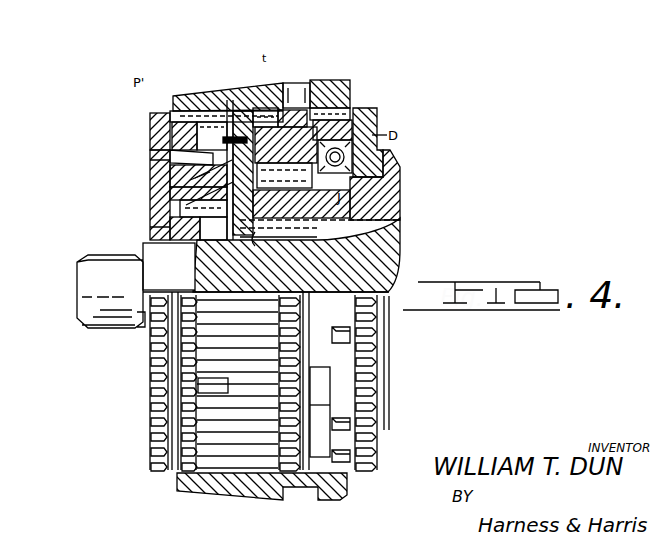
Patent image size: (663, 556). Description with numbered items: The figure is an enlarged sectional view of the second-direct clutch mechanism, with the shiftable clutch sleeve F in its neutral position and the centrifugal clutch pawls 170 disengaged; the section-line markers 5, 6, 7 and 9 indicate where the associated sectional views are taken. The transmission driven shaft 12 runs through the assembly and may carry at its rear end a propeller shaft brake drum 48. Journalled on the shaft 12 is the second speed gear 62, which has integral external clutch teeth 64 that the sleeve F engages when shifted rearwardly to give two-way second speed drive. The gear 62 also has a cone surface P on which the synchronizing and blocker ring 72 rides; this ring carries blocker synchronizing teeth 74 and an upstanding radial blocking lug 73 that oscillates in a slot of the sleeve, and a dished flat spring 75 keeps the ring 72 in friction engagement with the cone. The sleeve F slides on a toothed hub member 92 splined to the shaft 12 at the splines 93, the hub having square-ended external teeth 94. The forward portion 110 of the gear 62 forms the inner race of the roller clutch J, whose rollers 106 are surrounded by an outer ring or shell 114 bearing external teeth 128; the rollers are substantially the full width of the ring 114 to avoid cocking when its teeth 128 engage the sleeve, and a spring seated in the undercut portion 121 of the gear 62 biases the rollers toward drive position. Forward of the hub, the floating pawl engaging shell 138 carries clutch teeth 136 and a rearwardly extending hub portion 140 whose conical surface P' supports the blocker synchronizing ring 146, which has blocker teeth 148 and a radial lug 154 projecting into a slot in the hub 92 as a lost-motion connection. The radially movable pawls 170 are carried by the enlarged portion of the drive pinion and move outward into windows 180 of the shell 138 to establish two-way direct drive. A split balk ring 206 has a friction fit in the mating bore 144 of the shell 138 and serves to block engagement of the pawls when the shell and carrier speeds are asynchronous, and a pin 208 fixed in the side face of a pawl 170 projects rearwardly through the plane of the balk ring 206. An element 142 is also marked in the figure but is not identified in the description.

The section line 5- 5 is at (182, 63).
The section line 6- 6 is at (227, 100).
The section line 7- 7 is at (338, 80).
The section line 9- 9 is at (147, 109).
The transmission driven shaft 12 is at (296, 255).
The propeller shaft brake drum 48 is at (190, 180).
The second speed gear 62 is at (390, 158).
The external clutch teeth 64 is at (367, 112).
The synchronizing and blocker ring 72 is at (352, 112).
The blocking lug 73 is at (330, 385).
The blocker synchronizing teeth 74 is at (353, 107).
The dished flat spring 75 is at (305, 108).
The toothed hub member 92 is at (186, 207).
The splines 93 is at (320, 239).
The external splines or teeth 94 is at (212, 121).
The rollers 106 is at (284, 175).
The forward portion of the gear 110 is at (301, 204).
The outer ring or shell 114 is at (286, 145).
The undercut portion 121 is at (360, 190).
The external teeth 128 is at (300, 113).
The clutch teeth 136 is at (150, 115).
The floating pawl engaging shell 138 is at (160, 133).
The hub portion 140 is at (183, 168).
The clutch disc 142 is at (198, 185).
The mating bore 144 is at (195, 178).
The blocker synchronizing ring 146 is at (190, 120).
The blocker synchronizing teeth 148 is at (183, 120).
The radially directed lug 154 is at (245, 112).
The pawls 170 is at (186, 205).
The windows 180 is at (178, 162).
The split balk ring 206 is at (200, 212).
The pin 208 is at (185, 232).